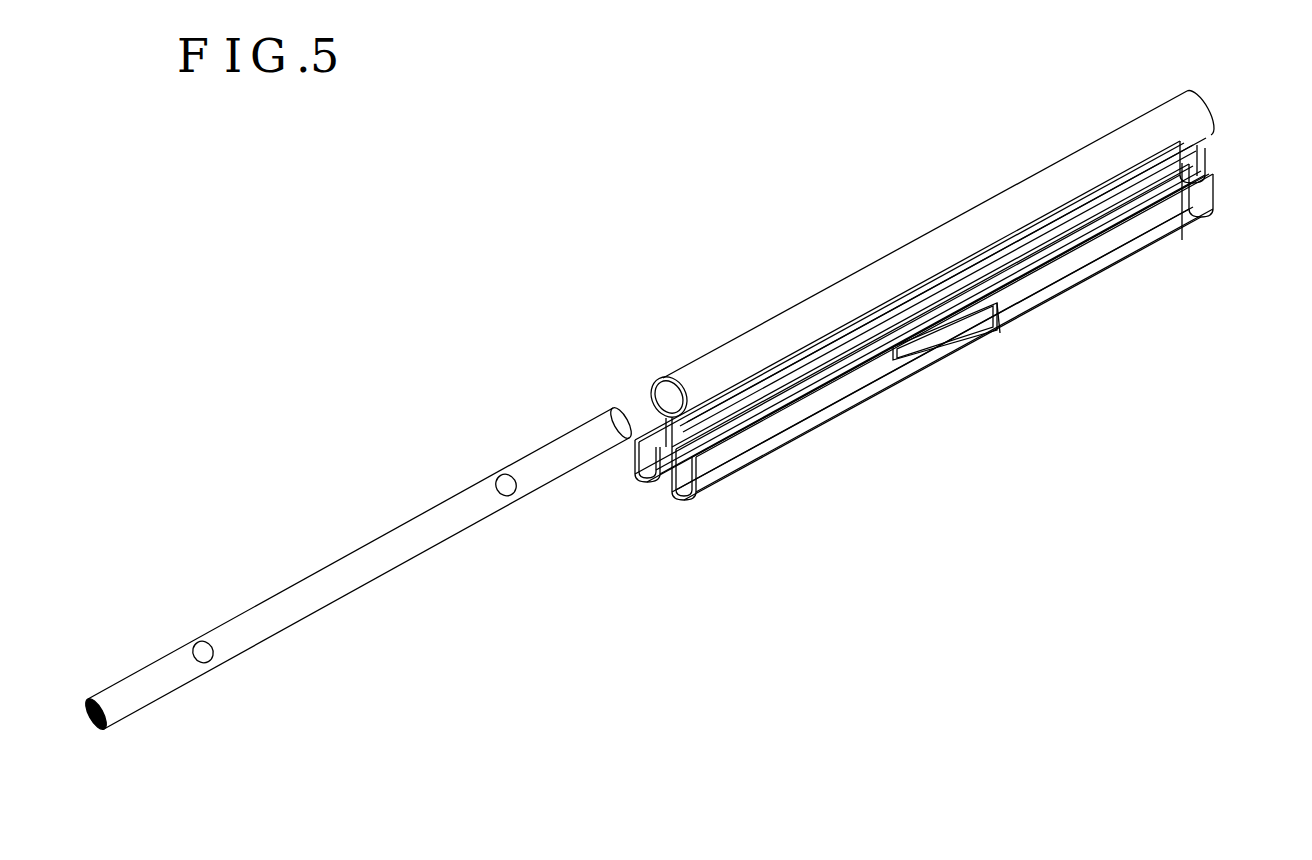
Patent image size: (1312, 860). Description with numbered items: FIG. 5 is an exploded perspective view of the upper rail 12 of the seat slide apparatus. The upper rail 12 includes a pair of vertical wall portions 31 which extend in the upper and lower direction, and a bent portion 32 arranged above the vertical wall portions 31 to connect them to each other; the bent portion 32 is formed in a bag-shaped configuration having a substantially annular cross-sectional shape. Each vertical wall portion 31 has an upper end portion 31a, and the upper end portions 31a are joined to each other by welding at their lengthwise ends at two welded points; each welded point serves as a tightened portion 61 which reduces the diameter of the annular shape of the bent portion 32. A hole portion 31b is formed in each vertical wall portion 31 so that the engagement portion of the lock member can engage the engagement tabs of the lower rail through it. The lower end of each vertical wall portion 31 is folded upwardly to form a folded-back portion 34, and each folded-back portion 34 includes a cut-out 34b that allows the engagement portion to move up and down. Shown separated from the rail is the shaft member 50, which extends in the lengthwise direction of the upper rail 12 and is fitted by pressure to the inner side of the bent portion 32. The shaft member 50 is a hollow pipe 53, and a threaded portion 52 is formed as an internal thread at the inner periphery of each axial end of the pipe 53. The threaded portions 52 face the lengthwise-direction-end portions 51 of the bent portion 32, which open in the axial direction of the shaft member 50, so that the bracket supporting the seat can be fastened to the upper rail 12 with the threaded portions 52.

The upper rail 12 is at (268, 269).
The bent portion 32 is at (915, 256).
The lengthwise-direction-end portion 51 is at (655, 384).
The folded-back portion 34 is at (636, 460).
The cut-out 34b is at (1002, 333).
The tightened portion 61 is at (718, 458).
The vertical wall portion 31 is at (786, 382).
The upper end portion 31a is at (938, 288).
The hole portion 31b is at (975, 335).
The shaft member 50 is at (368, 526).
The pipe 53 is at (358, 568).
The threaded portion 52 is at (552, 452).